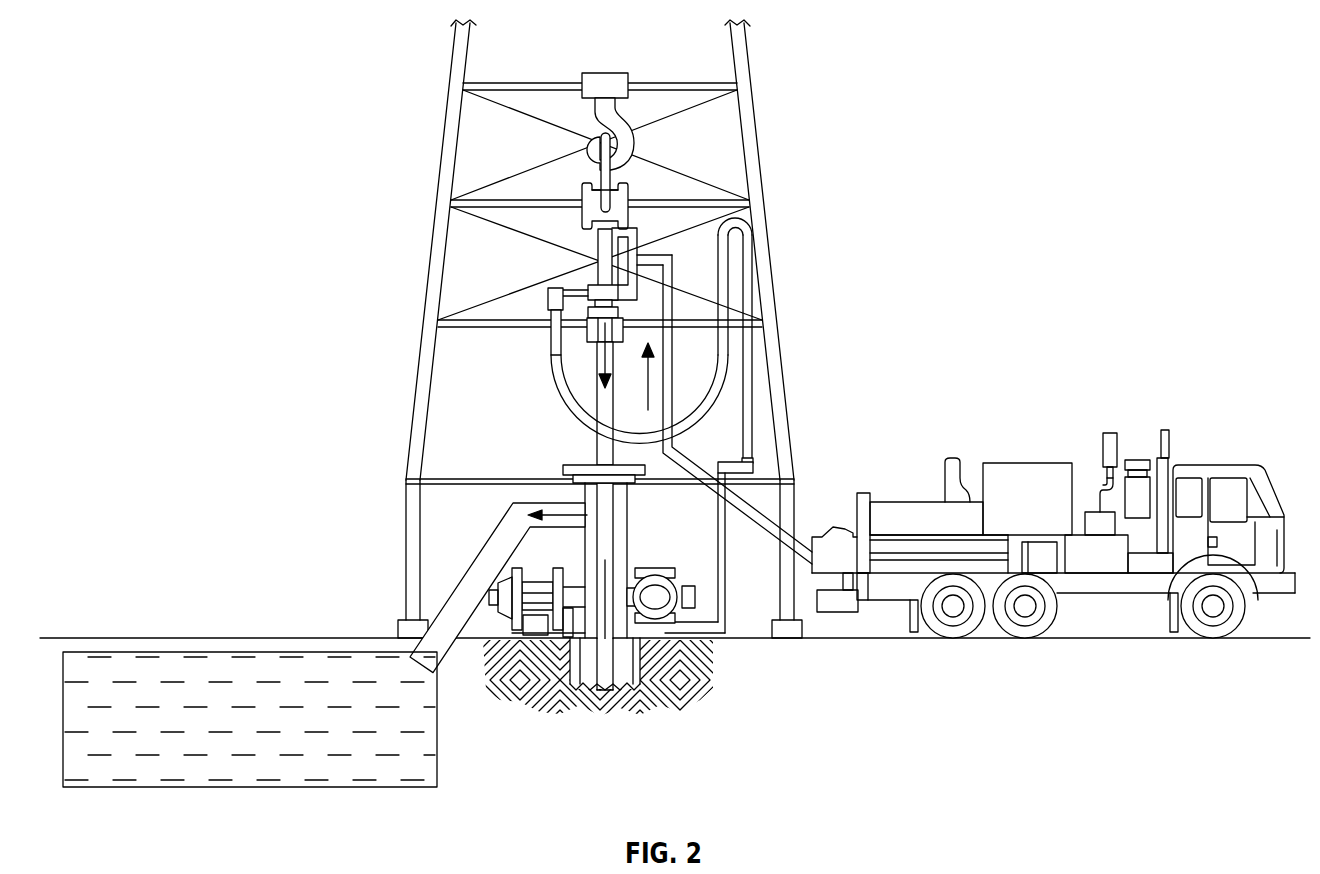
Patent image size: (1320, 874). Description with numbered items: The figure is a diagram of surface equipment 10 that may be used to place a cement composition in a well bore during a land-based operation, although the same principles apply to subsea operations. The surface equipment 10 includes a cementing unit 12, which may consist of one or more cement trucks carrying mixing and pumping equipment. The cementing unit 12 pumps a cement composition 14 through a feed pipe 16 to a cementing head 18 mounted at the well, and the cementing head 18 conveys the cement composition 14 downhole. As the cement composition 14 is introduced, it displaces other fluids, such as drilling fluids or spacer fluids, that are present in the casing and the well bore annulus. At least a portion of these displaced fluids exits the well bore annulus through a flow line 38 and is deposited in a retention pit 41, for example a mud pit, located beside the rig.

The surface equipment 10 is at (675, 438).
The cementing unit 12 is at (1099, 604).
The cement composition 14 is at (596, 400).
The feed pipe 16 is at (752, 510).
The cementing head 18 is at (645, 188).
The flow line 38 is at (443, 608).
The retention pit 41 is at (375, 788).